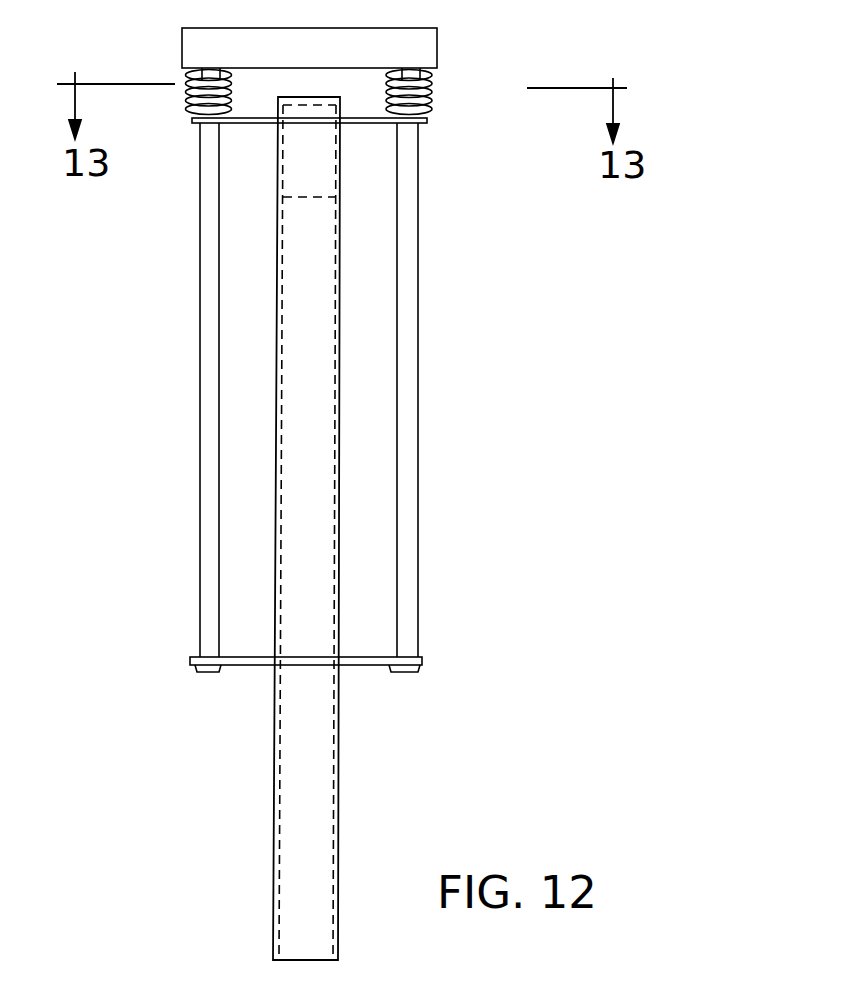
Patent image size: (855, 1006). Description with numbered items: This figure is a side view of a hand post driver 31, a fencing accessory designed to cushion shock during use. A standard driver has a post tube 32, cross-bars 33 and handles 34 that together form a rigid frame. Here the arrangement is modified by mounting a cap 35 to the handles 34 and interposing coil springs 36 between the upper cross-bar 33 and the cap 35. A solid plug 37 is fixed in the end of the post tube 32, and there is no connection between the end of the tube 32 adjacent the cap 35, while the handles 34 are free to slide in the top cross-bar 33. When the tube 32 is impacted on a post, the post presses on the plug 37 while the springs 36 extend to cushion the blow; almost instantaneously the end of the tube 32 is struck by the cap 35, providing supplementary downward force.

The hand post driver 31 is at (447, 405).
The post tube 32 is at (278, 377).
The cross-bars 33 is at (425, 122).
The handles 34 is at (412, 276).
The cap 35 is at (424, 43).
The coil springs 36 is at (432, 88).
The solid plug 37 is at (280, 152).